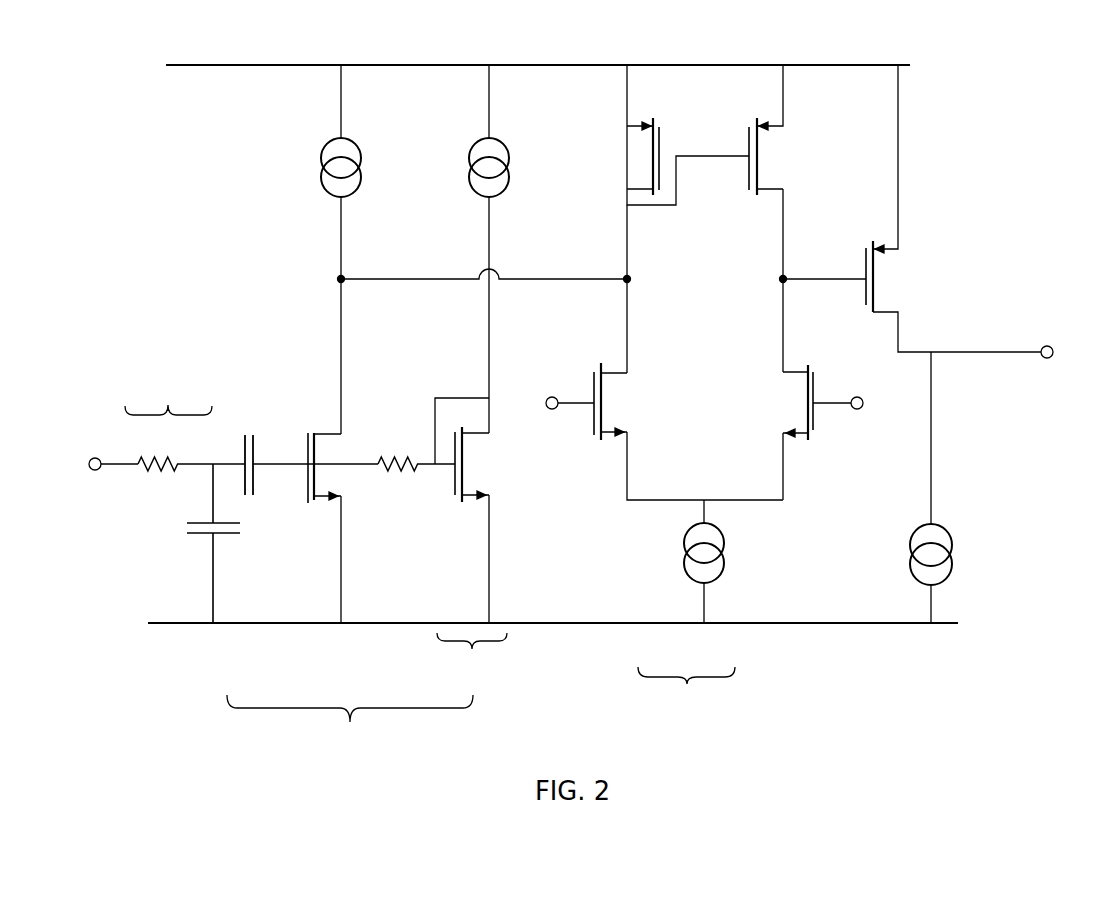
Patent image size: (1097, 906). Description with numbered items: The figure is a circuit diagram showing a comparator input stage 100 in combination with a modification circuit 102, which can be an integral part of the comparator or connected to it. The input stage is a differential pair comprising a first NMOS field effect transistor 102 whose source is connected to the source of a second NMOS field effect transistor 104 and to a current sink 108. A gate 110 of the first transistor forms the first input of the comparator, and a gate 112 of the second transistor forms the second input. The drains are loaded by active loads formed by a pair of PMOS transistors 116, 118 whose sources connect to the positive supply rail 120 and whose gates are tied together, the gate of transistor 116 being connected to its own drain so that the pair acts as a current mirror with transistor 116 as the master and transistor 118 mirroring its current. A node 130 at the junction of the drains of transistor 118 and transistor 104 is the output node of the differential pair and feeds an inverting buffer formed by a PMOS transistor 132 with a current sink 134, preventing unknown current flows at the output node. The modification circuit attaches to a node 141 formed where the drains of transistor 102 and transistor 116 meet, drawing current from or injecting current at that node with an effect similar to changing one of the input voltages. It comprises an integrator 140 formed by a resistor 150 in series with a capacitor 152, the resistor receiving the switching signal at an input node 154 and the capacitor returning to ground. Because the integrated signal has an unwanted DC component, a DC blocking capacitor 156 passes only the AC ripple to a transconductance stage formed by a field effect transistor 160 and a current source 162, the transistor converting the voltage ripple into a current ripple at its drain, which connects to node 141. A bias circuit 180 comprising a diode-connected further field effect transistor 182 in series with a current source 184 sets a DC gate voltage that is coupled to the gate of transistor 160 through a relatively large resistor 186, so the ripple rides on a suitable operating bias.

The comparator input stage 100 is at (686, 693).
The first NMOS field effect transistor 102 is at (620, 390).
The second NMOS field effect transistor 104 is at (786, 394).
The current sink 108 is at (727, 548).
The gate of the first NMOS field effect transistor 110 is at (594, 446).
The gate of the second NMOS field effect transistor 112 is at (816, 428).
The PMOS transistor 116 is at (640, 154).
The PMOS transistor 118 is at (772, 178).
The positive supply rail 120 is at (701, 64).
The node 130 is at (781, 280).
The PMOS transistor 132 is at (888, 286).
The current sink 134 is at (953, 548).
The integrator 140 is at (168, 394).
The node 141 is at (632, 278).
The resistor 150 is at (146, 470).
The capacitor 152 is at (205, 536).
The input node 154 is at (91, 458).
The DC blocking capacitor 156 is at (250, 430).
The field effect transistor 160 is at (309, 500).
The current source 162 is at (362, 157).
The bias circuit 180 is at (472, 658).
The further field effect transistor 182 is at (478, 460).
The current source 184 is at (510, 156).
The resistor 186 is at (392, 454).